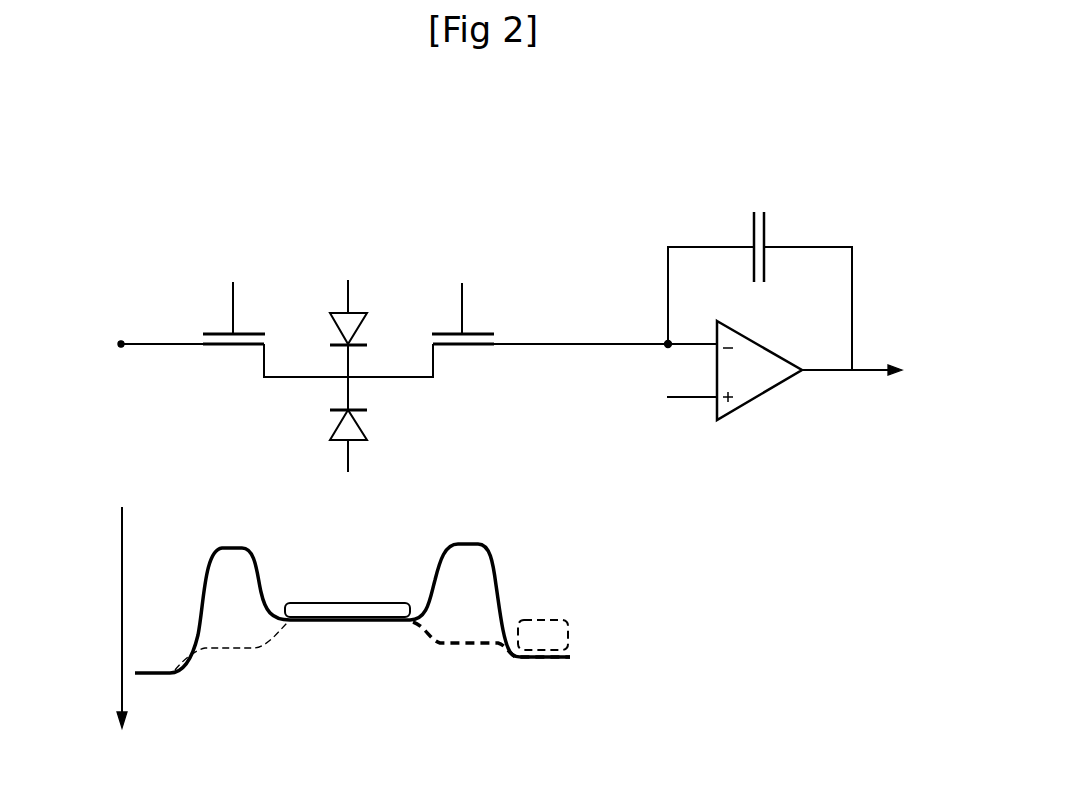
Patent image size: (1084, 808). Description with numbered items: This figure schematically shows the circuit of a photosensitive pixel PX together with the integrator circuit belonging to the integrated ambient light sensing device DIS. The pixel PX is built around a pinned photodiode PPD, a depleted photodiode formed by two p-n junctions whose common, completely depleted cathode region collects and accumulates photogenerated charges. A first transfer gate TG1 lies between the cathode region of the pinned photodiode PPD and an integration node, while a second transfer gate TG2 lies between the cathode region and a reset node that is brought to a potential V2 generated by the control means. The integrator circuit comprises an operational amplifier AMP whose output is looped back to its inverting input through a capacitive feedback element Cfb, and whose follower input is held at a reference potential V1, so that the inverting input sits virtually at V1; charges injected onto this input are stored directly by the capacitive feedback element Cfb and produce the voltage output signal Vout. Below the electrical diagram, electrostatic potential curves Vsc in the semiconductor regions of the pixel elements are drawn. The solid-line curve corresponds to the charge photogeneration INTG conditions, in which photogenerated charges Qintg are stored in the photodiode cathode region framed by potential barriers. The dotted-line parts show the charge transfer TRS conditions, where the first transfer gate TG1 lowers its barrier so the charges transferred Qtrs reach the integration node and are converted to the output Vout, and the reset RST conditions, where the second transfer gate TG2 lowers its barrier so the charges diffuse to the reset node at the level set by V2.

The photosensitive pixel PX is at (181, 188).
The integrated ambient light sensing device DIS is at (847, 149).
The potential V2 is at (124, 330).
The second transfer gate TG2 is at (318, 316).
The first transfer gate TG1 is at (550, 299).
The pinned photodiode PPD is at (319, 376).
The capacitive feedback element Cfb is at (760, 276).
The operational amplifier AMP is at (735, 370).
The reference potential V1 is at (685, 381).
The voltage output signal Vout is at (866, 359).
The electrostatic potential curves Vsc is at (98, 617).
The charge photogeneration conditions INTG is at (440, 572).
The reset conditions RST is at (240, 648).
The photogenerated charges Qintg is at (350, 616).
The charge transfer conditions TRS is at (447, 647).
The transferred charges Qtrs is at (545, 622).